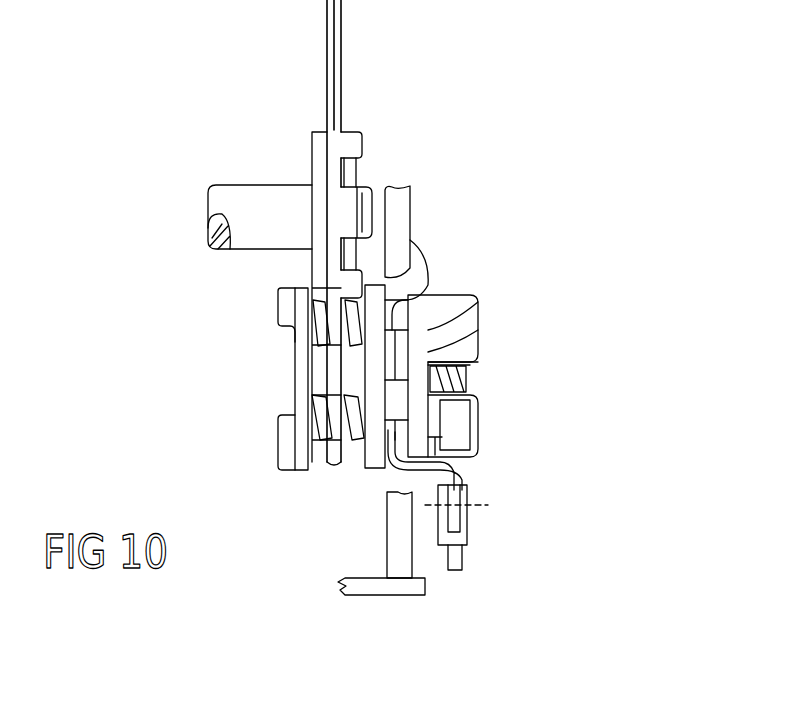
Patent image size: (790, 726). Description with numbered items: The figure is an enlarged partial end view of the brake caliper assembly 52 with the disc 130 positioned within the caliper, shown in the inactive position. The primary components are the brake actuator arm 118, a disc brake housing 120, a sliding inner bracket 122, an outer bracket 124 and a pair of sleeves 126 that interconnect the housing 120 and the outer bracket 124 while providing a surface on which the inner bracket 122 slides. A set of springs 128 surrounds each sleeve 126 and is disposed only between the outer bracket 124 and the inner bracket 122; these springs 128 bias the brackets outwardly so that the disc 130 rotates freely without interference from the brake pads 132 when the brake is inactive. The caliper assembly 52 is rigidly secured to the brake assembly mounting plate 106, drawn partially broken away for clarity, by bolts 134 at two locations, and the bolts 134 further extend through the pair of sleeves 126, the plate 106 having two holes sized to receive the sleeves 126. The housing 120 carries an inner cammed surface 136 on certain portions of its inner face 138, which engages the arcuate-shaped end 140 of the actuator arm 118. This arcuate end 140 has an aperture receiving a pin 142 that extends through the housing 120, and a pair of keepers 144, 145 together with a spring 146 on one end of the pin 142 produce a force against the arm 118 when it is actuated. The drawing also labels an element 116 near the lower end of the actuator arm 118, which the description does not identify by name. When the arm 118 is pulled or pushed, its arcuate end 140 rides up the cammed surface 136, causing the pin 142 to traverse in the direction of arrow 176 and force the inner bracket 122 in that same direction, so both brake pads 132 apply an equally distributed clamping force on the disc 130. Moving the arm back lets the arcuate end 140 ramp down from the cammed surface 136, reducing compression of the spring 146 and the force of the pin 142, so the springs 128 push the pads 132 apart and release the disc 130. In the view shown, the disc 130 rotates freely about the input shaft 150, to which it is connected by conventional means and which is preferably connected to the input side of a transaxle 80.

The brake caliper assembly 52 is at (470, 146).
The transaxle 80 is at (345, 580).
The brake assembly mounting plate 106 is at (410, 200).
The actuator rod 116 is at (468, 542).
The brake actuator arm 118 is at (467, 530).
The disc brake housing 120 is at (452, 468).
The sliding inner bracket 122 is at (330, 302).
The outer bracket 124 is at (280, 455).
The sleeves 126 is at (323, 418).
The springs 128 is at (315, 395).
The disc 130 is at (337, 30).
The brake pads 132 is at (313, 357).
The bolts 134 is at (455, 447).
The inner cammed surface 136 is at (425, 350).
The inner face 138 is at (405, 290).
The arcuate-shaped end 140 is at (405, 298).
The pin 142 is at (470, 378).
The keeper 144 is at (472, 395).
The keeper 145 is at (435, 437).
The spring 146 is at (448, 352).
The input shaft 150 is at (290, 229).
The arrow 176 is at (613, 373).